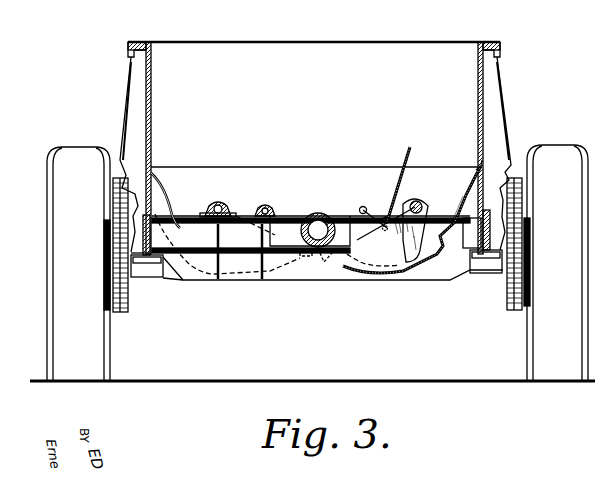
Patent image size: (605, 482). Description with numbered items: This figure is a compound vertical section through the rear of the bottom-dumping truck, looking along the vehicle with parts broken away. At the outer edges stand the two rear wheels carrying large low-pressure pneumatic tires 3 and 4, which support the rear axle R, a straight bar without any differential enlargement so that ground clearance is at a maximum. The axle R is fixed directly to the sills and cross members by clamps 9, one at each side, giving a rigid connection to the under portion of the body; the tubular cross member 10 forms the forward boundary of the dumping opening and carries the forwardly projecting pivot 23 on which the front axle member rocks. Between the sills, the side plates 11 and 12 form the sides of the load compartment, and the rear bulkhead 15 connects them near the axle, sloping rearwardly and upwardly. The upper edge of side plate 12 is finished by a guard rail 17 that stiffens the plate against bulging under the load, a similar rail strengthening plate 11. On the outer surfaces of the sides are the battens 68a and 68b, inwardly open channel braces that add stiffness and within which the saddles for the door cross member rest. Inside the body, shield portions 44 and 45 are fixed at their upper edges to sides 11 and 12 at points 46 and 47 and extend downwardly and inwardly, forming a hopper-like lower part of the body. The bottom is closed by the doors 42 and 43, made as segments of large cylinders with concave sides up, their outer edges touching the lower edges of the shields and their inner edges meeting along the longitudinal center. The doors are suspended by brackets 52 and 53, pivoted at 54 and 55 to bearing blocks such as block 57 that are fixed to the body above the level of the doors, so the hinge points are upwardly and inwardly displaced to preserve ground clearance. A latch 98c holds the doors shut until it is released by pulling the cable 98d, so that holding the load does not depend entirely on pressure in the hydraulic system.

The pneumatic tire 3 is at (547, 150).
The pneumatic tire 4 is at (63, 163).
The clamp 9 is at (147, 272).
The rear axle R is at (172, 278).
The cross member 10 is at (252, 246).
The side plate 11 is at (483, 89).
The side plate 12 is at (146, 93).
The rear bulkhead 15 is at (298, 123).
The guard rail 17 is at (146, 64).
The pivot 23 is at (313, 250).
The door 42 is at (393, 272).
The door 43 is at (256, 270).
The shield portion 44 is at (471, 183).
The shield portion 45 is at (170, 205).
The fixing point 46 is at (478, 168).
The fixing point 47 is at (152, 187).
The bracket 52 is at (384, 217).
The bracket 53 is at (264, 212).
The pivot 54 is at (416, 201).
The pivot 55 is at (222, 204).
The bearing block 57 is at (236, 216).
The batten 68a is at (500, 113).
The batten 68b is at (125, 121).
The latch 98c is at (366, 194).
The cable 98d is at (404, 153).